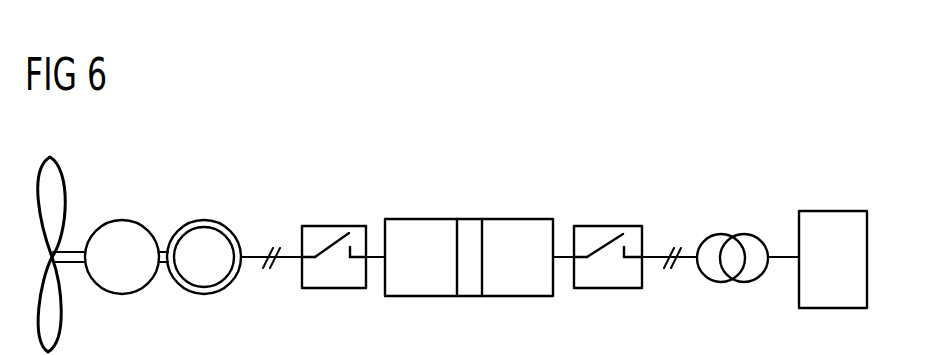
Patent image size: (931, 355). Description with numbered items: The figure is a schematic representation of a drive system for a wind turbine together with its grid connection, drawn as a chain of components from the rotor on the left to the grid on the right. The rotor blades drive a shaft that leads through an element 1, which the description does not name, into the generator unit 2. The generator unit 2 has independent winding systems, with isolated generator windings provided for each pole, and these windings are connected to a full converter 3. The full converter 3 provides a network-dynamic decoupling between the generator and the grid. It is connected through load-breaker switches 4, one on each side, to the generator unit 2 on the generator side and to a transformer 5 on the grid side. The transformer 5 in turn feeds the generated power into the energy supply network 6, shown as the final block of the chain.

The generator 1 is at (122, 218).
The generator unit 2 is at (202, 219).
The full converter 3 is at (470, 218).
The load-breaker switches 4 is at (333, 224).
The transformer 5 is at (719, 234).
The energy supply network 6 is at (832, 211).